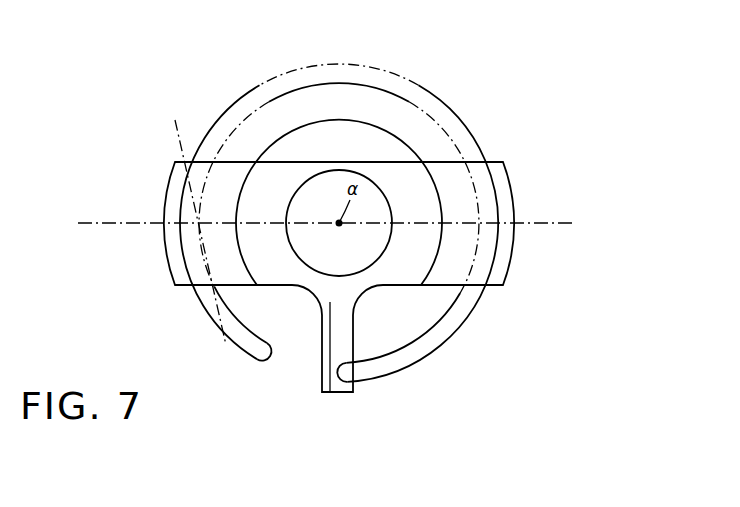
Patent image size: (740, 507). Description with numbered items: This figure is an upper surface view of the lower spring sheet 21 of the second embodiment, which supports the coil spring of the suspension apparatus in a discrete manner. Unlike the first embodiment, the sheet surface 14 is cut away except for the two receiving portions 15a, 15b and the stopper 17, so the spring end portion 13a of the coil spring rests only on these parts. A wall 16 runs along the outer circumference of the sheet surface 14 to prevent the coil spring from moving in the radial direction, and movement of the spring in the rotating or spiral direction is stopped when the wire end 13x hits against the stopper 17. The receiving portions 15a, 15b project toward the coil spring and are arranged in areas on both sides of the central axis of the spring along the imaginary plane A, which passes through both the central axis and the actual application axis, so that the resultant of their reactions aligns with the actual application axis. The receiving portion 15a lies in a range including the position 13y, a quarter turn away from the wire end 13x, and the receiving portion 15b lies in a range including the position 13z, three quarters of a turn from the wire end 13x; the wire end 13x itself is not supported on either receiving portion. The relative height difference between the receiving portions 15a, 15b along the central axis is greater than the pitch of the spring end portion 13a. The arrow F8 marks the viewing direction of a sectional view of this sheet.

The spring end portion 13a is at (350, 63).
The wire end 13x is at (372, 378).
The position away from the wire end by 0.25 turns 13y is at (498, 196).
The position away from the wire end by 0.75 turns 13z is at (192, 221).
The sheet surface 14 is at (233, 187).
The receiving portion 15a is at (505, 255).
The receiving portion 15b is at (192, 238).
The wall 16 is at (170, 195).
The stopper 17 is at (328, 392).
The lower spring sheet 21 is at (504, 101).
The imaginary plane A is at (577, 223).
The force direction F8 is at (340, 430).